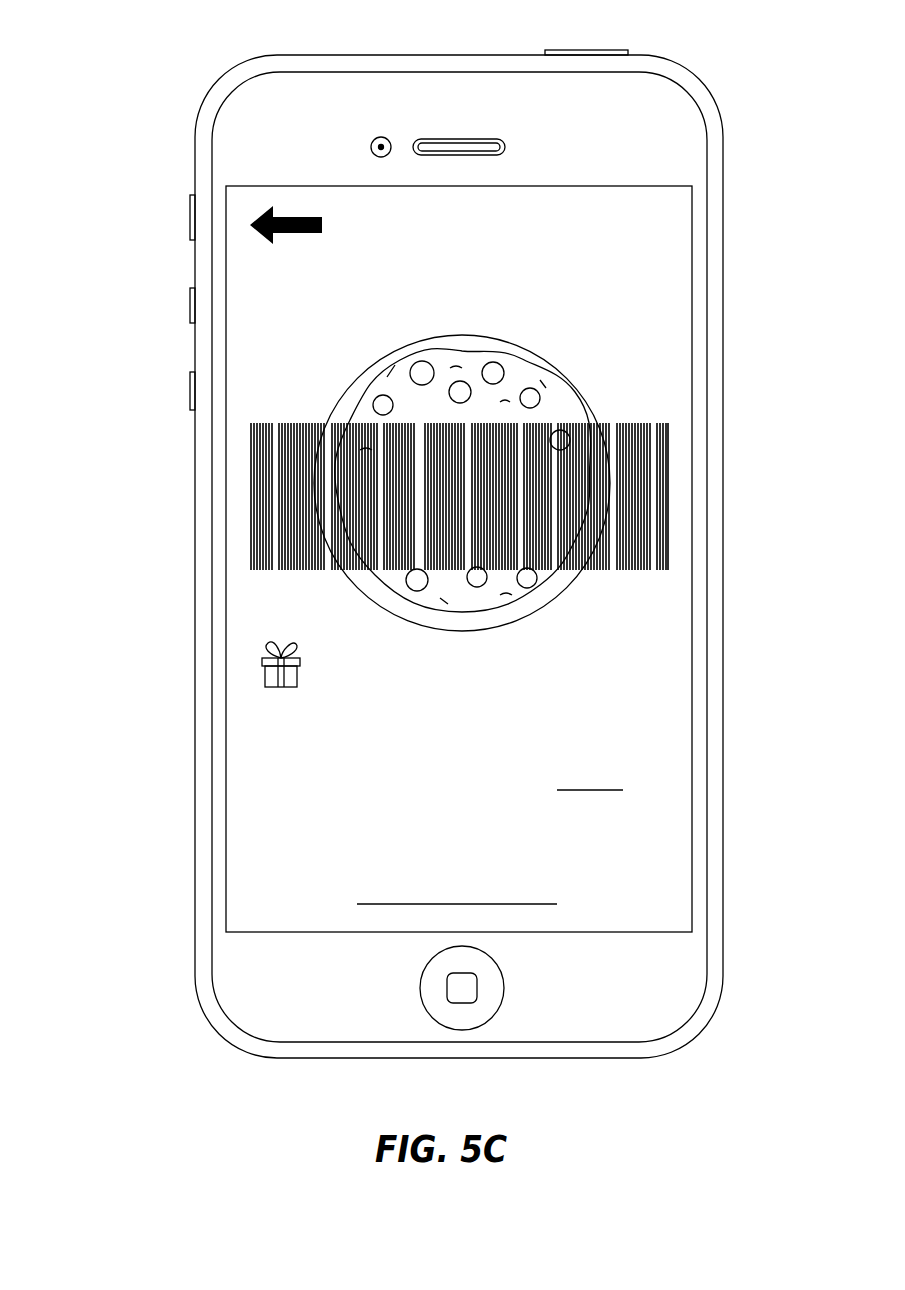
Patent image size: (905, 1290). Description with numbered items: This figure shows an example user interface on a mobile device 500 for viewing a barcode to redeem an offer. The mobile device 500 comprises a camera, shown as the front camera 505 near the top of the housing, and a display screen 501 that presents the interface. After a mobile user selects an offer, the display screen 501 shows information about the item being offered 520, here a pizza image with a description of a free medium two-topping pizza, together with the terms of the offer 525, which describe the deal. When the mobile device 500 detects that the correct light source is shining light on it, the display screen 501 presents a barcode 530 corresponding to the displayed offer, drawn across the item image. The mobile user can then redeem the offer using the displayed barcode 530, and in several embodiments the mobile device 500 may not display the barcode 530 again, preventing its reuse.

The mobile device 500 is at (146, 85).
The display screen 501 is at (695, 222).
The front camera 505 is at (387, 137).
The item being offered 520 is at (677, 355).
The barcode 530 is at (680, 447).
The terms of the offer 525 is at (673, 748).